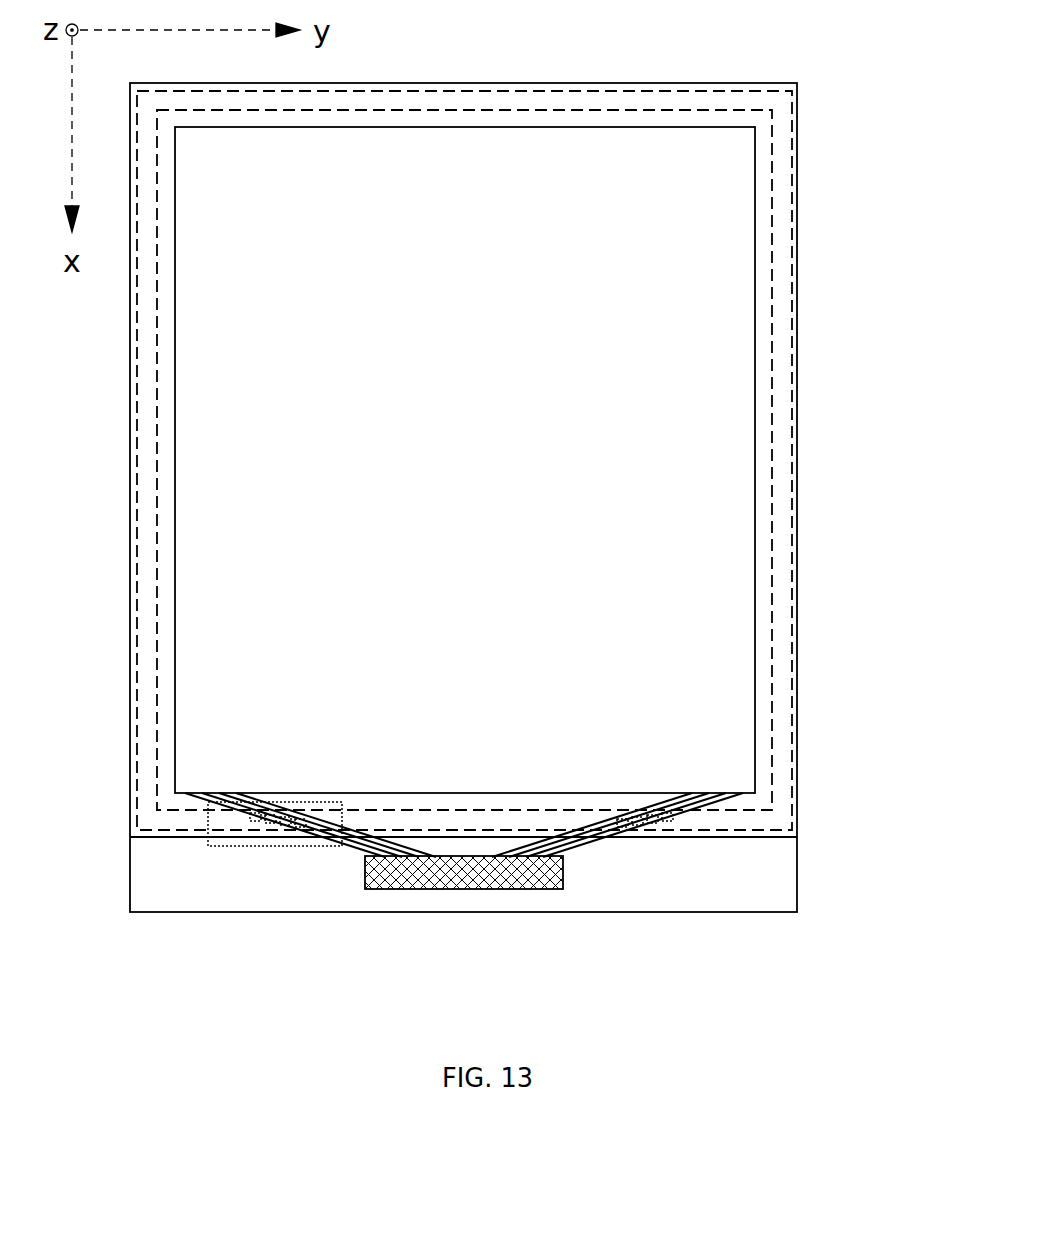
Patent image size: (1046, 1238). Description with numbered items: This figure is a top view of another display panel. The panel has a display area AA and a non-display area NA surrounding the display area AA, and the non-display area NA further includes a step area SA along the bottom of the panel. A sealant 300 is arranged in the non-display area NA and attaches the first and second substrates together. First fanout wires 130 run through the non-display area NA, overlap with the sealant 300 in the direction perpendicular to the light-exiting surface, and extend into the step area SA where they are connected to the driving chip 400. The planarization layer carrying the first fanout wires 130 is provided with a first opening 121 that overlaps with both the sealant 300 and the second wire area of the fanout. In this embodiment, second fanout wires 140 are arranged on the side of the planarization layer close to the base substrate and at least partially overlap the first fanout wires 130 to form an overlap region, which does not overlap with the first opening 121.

The sealant 300 is at (792, 742).
The non-display area NA is at (760, 480).
The display area AA is at (732, 612).
The step area SA is at (728, 887).
The first fanout wires 130 is at (198, 797).
The first opening 121 is at (263, 822).
The second fanout wires 140 is at (297, 820).
The driving chip 400 is at (485, 880).